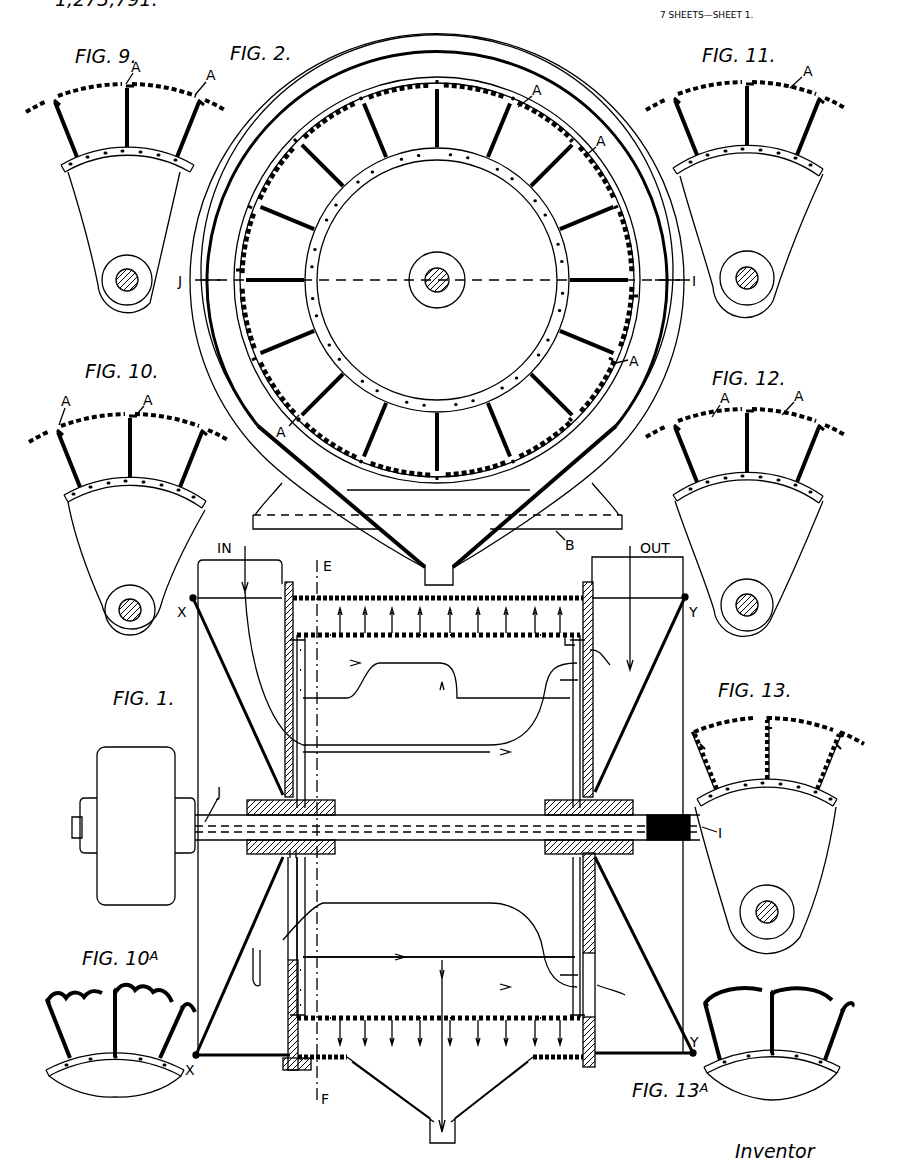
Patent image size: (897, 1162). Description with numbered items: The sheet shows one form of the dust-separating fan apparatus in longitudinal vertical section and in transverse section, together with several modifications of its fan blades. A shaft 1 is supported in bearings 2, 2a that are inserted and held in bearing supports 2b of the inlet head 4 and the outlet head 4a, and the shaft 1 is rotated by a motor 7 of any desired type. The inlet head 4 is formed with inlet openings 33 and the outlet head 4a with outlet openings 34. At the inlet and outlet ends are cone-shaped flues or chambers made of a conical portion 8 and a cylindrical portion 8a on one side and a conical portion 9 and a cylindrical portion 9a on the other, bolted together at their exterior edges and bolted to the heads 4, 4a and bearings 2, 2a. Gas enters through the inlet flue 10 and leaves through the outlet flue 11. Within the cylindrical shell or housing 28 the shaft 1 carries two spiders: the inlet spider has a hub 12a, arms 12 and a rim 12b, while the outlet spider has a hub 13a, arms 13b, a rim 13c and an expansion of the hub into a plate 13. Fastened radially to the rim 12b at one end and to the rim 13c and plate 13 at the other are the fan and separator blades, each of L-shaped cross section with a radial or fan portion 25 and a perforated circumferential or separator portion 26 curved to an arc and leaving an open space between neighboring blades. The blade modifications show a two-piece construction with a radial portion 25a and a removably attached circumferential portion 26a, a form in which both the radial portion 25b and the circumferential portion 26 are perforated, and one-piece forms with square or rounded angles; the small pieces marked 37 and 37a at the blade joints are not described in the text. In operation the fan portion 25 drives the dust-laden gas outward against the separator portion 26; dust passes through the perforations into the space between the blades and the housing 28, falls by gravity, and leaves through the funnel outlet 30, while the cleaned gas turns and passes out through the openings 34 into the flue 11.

In FIG. 2, the shaft 1 is at (428, 291).
In FIG. 1, the shaft 1 is at (423, 816).
In FIG. 9, the shaft 1 is at (118, 287).
In FIG. 10, the shaft 1 is at (119, 624).
In FIG. 11, the shaft 1 is at (736, 292).
In FIG. 12, the shaft 1 is at (736, 619).
In FIG. 13, the shaft 1 is at (750, 927).
In FIG. 1, the bearing 2 is at (258, 856).
In FIG. 1, the bearing 2a is at (612, 854).
In FIG. 1, the bearing support 2b is at (303, 853).
In FIG. 1, the inlet head 4 is at (287, 652).
In FIG. 2, the outlet head 4a is at (440, 34).
In FIG. 1, the outlet head 4a is at (595, 713).
In FIG. 1, the motor 7 is at (140, 748).
In FIG. 1, the conical portion of inlet flue 8 is at (243, 700).
In FIG. 1, the cylindrical portion of inlet flue 8a is at (244, 1058).
In FIG. 1, the conical portion of outlet flue 9 is at (638, 697).
In FIG. 1, the cylindrical portion of outlet flue 9a is at (631, 1053).
In FIG. 1, the inlet flue 10 is at (243, 562).
In FIG. 1, the outlet flue 11 is at (658, 562).
In FIG. 1, the arm of inlet spider 12 is at (305, 763).
In FIG. 1, the hub of inlet spider 12a is at (330, 803).
In FIG. 1, the rim of inlet spider 12b is at (297, 673).
In FIG. 2, the plate 13 is at (458, 153).
In FIG. 1, the plate 13 is at (573, 760).
In FIG. 9, the plate 13 is at (142, 160).
In FIG. 10, the plate 13 is at (135, 553).
In FIG. 11, the plate 13 is at (748, 231).
In FIG. 12, the plate 13 is at (748, 554).
In FIG. 13, the plate 13 is at (766, 866).
In FIG. 10A, the plate 13 is at (119, 1062).
In FIG. 13A, the plate 13 is at (783, 1060).
In FIG. 2, the hub of outlet spider 13a is at (458, 270).
In FIG. 1, the hub of outlet spider 13a is at (550, 801).
In FIG. 9, the hub of outlet spider 13a is at (143, 257).
In FIG. 10, the hub of outlet spider 13a is at (132, 594).
In FIG. 11, the hub of outlet spider 13a is at (748, 263).
In FIG. 12, the hub of outlet spider 13a is at (748, 589).
In FIG. 13, the hub of outlet spider 13a is at (771, 897).
In FIG. 1, the arm of outlet spider 13b is at (580, 678).
In FIG. 1, the rim of outlet spider 13c is at (572, 643).
In FIG. 2, the radial or fan portion 25 is at (379, 128).
In FIG. 1, the radial or fan portion 25 is at (397, 696).
In FIG. 10A, the radial or fan portion 25 is at (60, 1026).
In FIG. 13A, the radial or fan portion 25 is at (716, 1030).
In FIG. 9, the radial portion 25a is at (67, 125).
In FIG. 10, the radial portion 25a is at (130, 452).
In FIG. 11, the radial portion 25a is at (747, 120).
In FIG. 12, the radial portion 25a is at (747, 447).
In FIG. 13, the perforated radial portion 25b is at (767, 755).
In FIG. 2, the circumferential or separator portion 26 is at (542, 127).
In FIG. 1, the circumferential or separator portion 26 is at (438, 637).
In FIG. 13, the circumferential or separator portion 26 is at (779, 719).
In FIG. 10A, the circumferential or separator portion 26 is at (78, 993).
In FIG. 13A, the circumferential or separator portion 26 is at (726, 995).
In FIG. 9, the circumferential portion 26a is at (74, 92).
In FIG. 10, the circumferential portion 26a is at (128, 415).
In FIG. 11, the circumferential portion 26a is at (745, 85).
In FIG. 12, the circumferential portion 26a is at (745, 411).
In FIG. 2, the shell or housing 28 is at (274, 116).
In FIG. 1, the shell or housing 28 is at (356, 596).
In FIG. 2, the funnel outlet 30 is at (482, 540).
In FIG. 1, the funnel outlet 30 is at (390, 1088).
In FIG. 1, the inlet opening 33 is at (295, 744).
In FIG. 1, the outlet opening 34 is at (590, 658).
In FIG. 2, the fastening bracket 37 is at (297, 222).
In FIG. 1, the fastening bracket 37 is at (450, 826).
In FIG. 9, the fastening bracket 37 is at (129, 99).
In FIG. 10, the fastening bracket 37 is at (132, 431).
In FIG. 11, the fastening bracket 37 is at (749, 97).
In FIG. 12, the fastening bracket 37 is at (749, 424).
In FIG. 13, the fastening bracket 37 is at (767, 718).
In FIG. 10A, the fastening bracket 37 is at (48, 995).
In FIG. 13A, the fastening bracket 37 is at (706, 1000).
In FIG. 13, the fastening bracket 37a is at (770, 738).